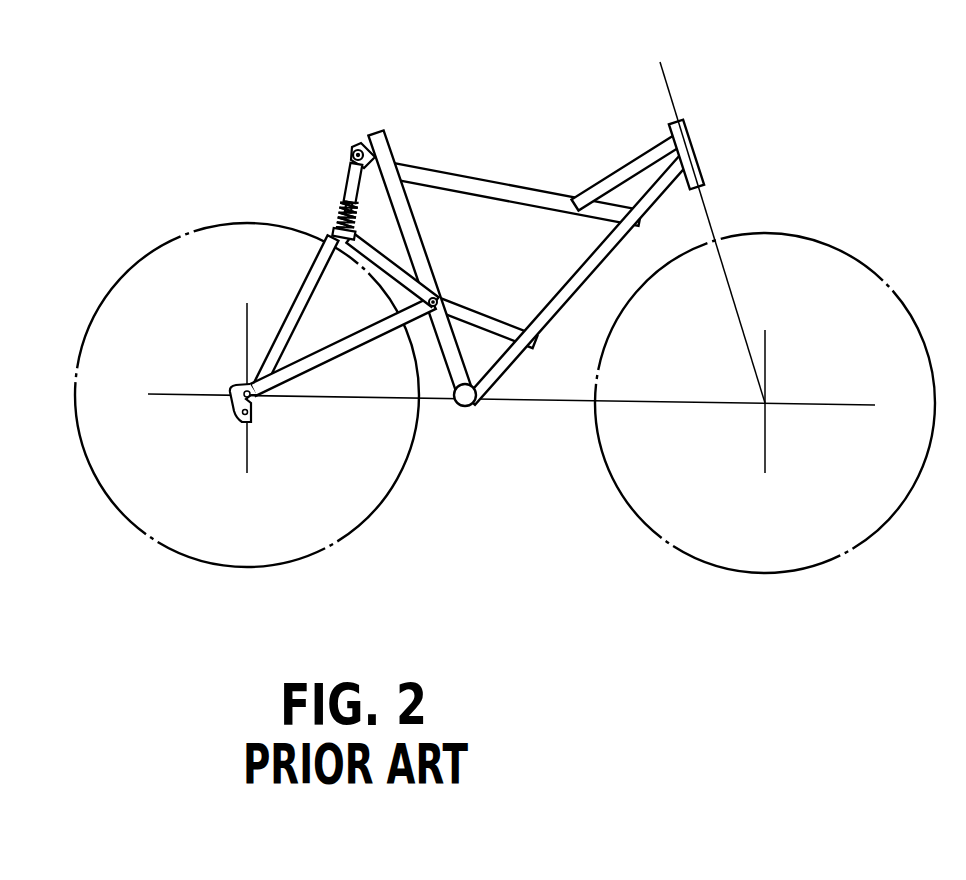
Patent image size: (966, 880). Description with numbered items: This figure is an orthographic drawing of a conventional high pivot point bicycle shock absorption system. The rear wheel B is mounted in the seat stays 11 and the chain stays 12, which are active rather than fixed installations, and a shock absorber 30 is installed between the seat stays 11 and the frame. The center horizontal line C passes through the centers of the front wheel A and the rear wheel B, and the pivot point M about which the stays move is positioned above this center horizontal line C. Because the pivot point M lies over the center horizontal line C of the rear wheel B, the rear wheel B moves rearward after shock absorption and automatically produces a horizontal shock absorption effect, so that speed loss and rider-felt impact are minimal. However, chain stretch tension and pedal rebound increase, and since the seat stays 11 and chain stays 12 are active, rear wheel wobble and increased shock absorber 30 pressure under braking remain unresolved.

The seat stays 11 is at (290, 316).
The chain stays 12 is at (334, 348).
The shock absorber 30 is at (335, 198).
The pivot point M is at (434, 300).
The front wheel A is at (703, 556).
The rear wheel B is at (130, 502).
The center horizontal line C is at (542, 404).